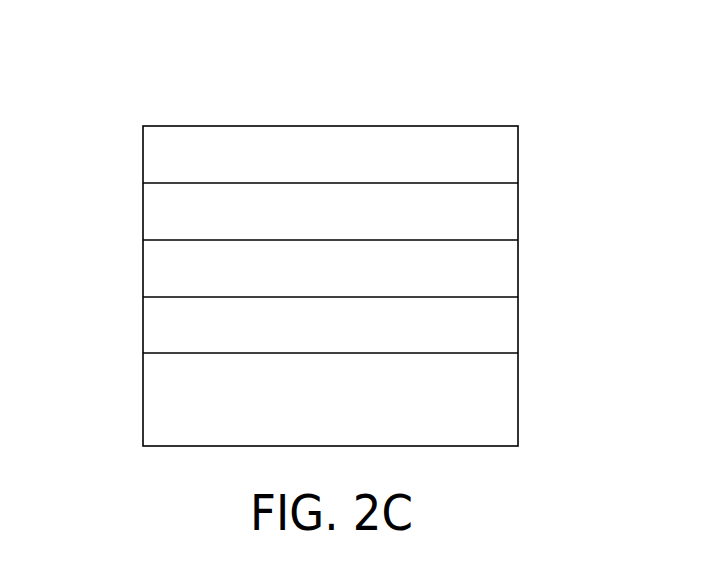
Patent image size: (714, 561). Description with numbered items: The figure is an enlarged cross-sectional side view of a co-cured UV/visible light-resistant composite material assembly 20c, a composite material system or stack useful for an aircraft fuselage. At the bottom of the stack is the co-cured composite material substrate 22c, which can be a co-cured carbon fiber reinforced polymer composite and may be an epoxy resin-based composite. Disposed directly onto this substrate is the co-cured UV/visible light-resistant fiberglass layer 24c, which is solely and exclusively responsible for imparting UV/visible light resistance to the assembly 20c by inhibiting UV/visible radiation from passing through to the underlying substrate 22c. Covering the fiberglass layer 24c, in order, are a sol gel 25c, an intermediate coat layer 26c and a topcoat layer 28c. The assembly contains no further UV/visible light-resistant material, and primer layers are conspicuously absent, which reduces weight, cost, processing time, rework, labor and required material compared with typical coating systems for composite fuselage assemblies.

The co-cured UV/visible light-resistant composite material assembly 20c is at (515, 99).
The topcoat layer 28c is at (148, 155).
The intermediate coat layer 26c is at (148, 212).
The sol gel 25c is at (148, 268).
The co-cured UV/visible light-resistant fiberglass layer 24c is at (148, 326).
The co-cured composite material substrate 22c is at (148, 402).